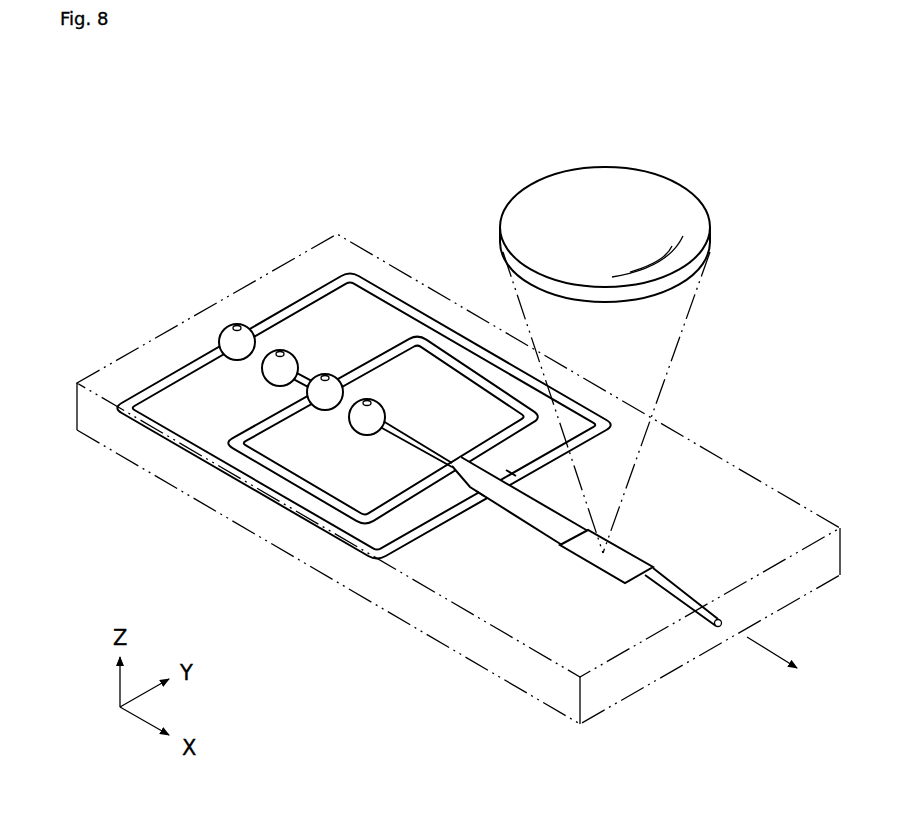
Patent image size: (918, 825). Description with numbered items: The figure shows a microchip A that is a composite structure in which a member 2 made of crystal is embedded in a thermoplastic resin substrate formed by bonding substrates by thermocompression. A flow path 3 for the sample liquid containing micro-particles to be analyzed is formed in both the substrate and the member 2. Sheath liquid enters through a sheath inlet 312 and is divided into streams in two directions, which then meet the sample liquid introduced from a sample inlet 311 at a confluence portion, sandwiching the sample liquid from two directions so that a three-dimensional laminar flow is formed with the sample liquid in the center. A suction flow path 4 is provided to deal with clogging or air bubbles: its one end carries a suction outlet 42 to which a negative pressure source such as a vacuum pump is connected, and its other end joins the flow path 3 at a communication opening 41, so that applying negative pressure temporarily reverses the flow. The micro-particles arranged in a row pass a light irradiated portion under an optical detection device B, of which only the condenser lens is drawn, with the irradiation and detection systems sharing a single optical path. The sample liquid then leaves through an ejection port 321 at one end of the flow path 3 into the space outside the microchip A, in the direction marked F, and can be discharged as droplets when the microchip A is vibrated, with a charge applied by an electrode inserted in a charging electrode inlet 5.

The member 2 is at (583, 562).
The flow path 3 is at (550, 534).
The suction flow path 4 is at (424, 314).
The charging electrode inlet 5 is at (313, 393).
The communication opening 41 is at (470, 500).
The suction outlet 42 is at (240, 327).
The sample inlet 311 is at (362, 422).
The sheath inlet 312 is at (290, 347).
The ejection port 321 is at (723, 628).
The microchip A is at (708, 442).
The optical detection device B is at (606, 175).
The flow direction F is at (784, 665).